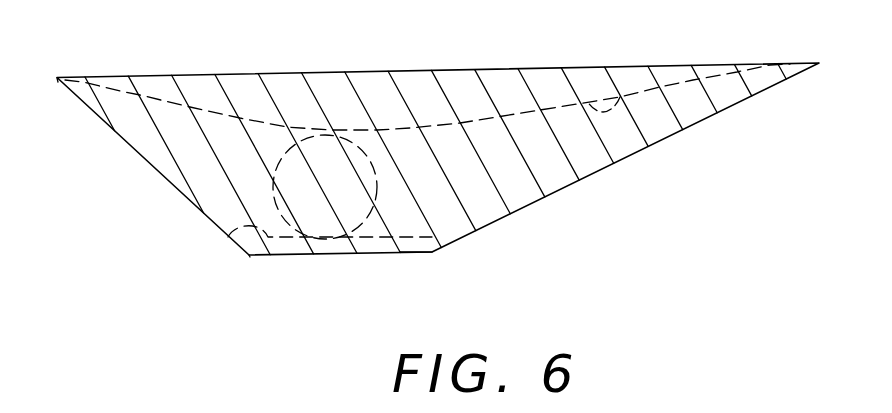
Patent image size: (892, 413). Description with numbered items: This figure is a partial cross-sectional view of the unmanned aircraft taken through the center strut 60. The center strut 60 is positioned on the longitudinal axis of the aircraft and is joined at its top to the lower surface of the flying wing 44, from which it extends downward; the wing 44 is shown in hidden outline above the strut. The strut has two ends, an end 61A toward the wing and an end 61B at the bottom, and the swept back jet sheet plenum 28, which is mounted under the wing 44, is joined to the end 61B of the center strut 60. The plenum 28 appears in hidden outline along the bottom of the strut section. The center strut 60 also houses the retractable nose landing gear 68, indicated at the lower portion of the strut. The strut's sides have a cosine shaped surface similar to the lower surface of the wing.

The center strut 60 is at (181, 192).
The end of the center strut 61A is at (57, 80).
The end of the center strut 61B is at (249, 256).
The jet sheet plenum 28 is at (228, 236).
The flying wing 44 is at (620, 97).
The retractable nose landing gear 68 is at (410, 252).